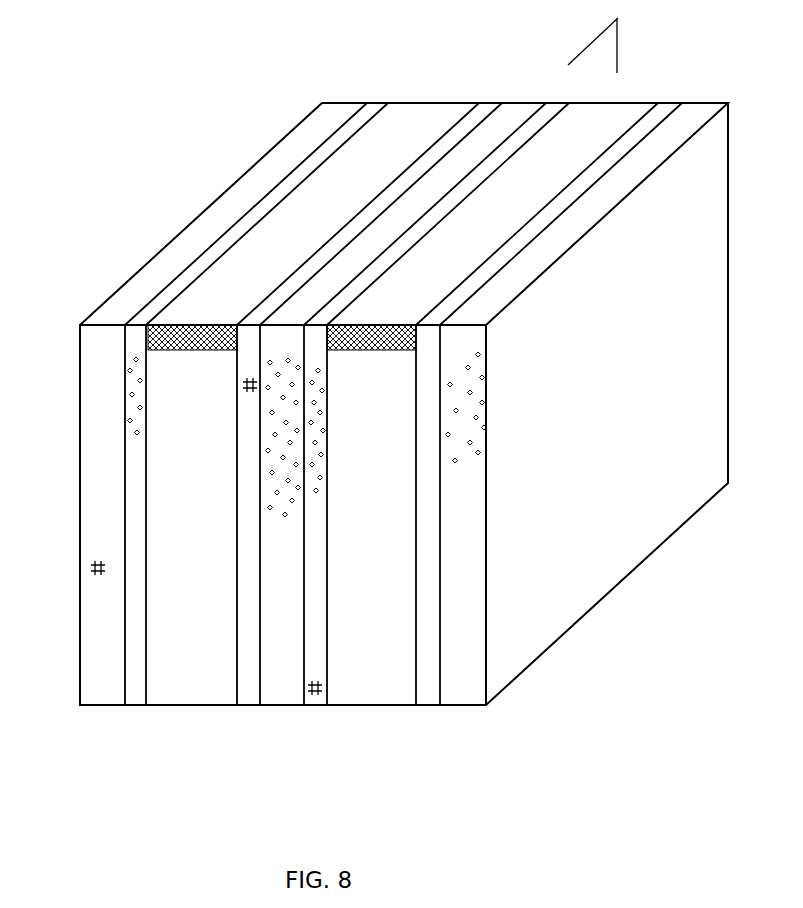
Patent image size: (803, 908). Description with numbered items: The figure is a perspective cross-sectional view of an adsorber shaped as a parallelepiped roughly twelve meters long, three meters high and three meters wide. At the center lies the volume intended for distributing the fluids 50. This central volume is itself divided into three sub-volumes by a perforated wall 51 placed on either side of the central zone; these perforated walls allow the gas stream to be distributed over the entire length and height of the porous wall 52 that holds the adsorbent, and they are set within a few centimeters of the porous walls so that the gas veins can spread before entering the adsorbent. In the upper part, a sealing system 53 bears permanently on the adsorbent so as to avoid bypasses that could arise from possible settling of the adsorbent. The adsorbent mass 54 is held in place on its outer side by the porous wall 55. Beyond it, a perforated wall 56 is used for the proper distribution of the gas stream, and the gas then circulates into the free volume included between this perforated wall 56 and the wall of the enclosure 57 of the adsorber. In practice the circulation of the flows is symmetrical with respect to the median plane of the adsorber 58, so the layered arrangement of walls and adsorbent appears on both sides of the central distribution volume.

The volume for distributing the fluids 50 is at (512, 115).
The perforated wall 51 is at (272, 348).
The porous wall 52 is at (243, 385).
The sealing system 53 is at (182, 342).
The adsorbent mass 54 is at (173, 455).
The porous wall 55 is at (148, 647).
The perforated wall 56 is at (122, 655).
The wall of the enclosure 57 is at (95, 568).
The median plane of the adsorber 58 is at (605, 48).